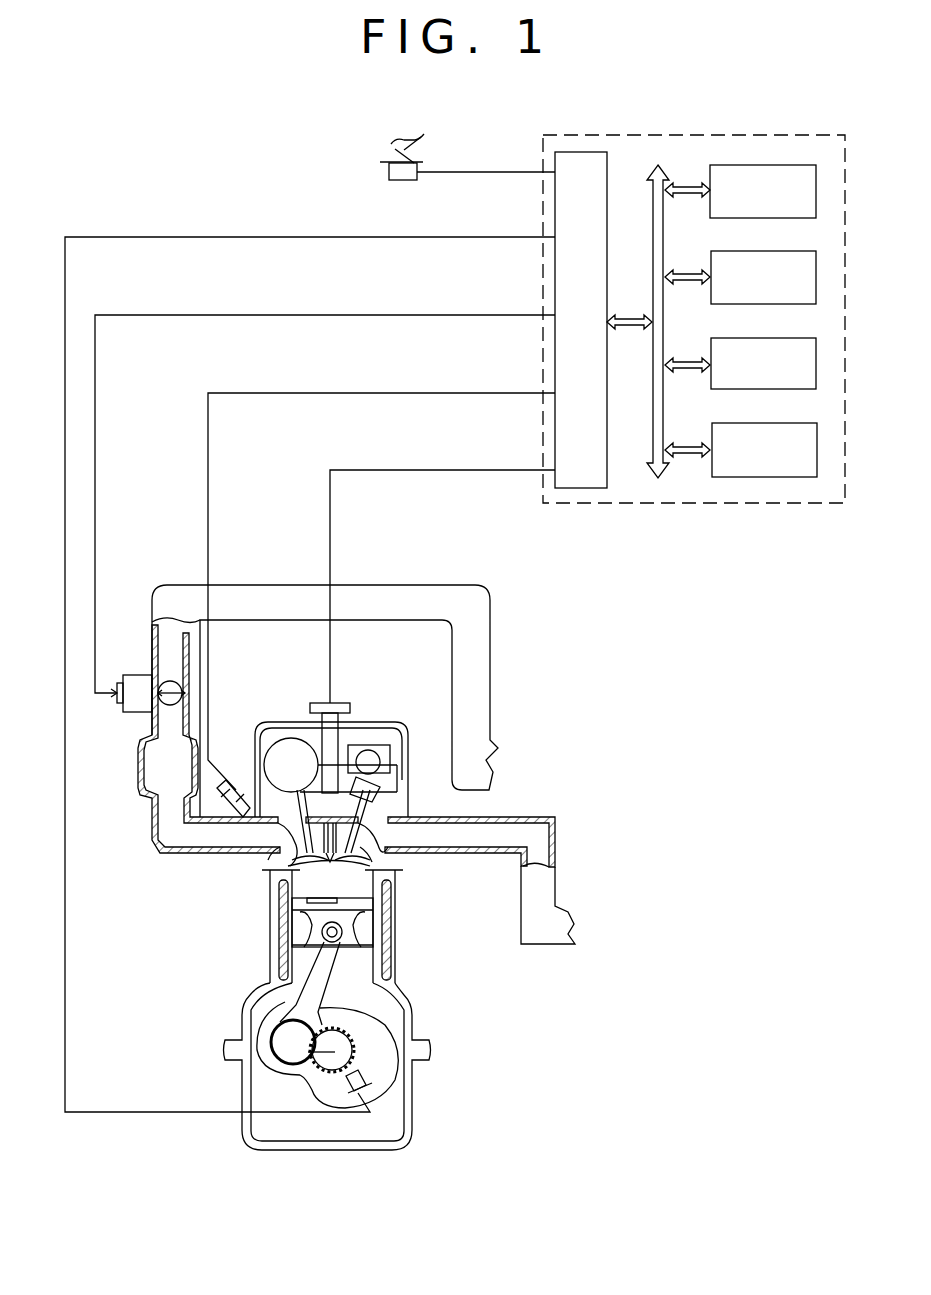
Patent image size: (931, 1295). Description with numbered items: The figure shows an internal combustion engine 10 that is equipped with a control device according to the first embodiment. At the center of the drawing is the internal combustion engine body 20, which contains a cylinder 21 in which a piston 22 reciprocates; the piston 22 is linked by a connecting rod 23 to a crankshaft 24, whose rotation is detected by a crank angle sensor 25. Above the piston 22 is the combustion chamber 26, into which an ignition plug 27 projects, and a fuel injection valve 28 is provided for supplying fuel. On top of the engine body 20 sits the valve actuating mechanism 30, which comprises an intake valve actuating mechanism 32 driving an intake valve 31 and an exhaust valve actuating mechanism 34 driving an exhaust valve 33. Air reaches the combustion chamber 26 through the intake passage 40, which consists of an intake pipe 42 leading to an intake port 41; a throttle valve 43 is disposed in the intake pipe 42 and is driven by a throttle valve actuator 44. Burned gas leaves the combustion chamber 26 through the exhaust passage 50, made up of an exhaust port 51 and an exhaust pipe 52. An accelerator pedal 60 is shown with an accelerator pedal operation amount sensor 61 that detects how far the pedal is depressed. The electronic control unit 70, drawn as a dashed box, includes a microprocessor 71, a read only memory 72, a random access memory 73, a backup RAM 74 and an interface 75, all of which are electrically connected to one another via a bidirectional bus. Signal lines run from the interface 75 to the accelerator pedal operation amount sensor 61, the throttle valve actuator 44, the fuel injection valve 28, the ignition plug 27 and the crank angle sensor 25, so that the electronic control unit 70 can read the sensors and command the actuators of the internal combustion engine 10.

The internal combustion engine 10 is at (132, 962).
The internal combustion engine body 20 is at (237, 965).
The cylinder 21 is at (298, 897).
The piston 22 is at (308, 930).
The connecting rod 23 is at (257, 983).
The crankshaft 24 is at (308, 1052).
The crank angle sensor 25 is at (366, 1084).
The combustion chamber 26 is at (328, 886).
The ignition plug 27 is at (388, 809).
The fuel injection valve 28 is at (248, 800).
The valve actuating mechanism 30 is at (440, 720).
The intake valve 31 is at (290, 866).
The intake valve actuating mechanism 32 is at (296, 738).
The exhaust valve 33 is at (372, 866).
The exhaust valve actuating mechanism 34 is at (372, 750).
The intake passage 40 is at (132, 818).
The intake port 41 is at (266, 855).
The intake pipe 42 is at (180, 585).
The throttle valve 43 is at (165, 682).
The throttle valve actuator 44 is at (138, 712).
The exhaust passage 50 is at (537, 963).
The exhaust port 51 is at (388, 852).
The exhaust pipe 52 is at (452, 853).
The accelerator pedal 60 is at (395, 150).
The accelerator pedal operation amount sensor 61 is at (389, 172).
The electronic control unit 70 is at (700, 503).
The microprocessor 71 is at (752, 166).
The read only memory 72 is at (752, 252).
The random access memory 73 is at (752, 339).
The backup RAM 74 is at (752, 424).
The interface 75 is at (608, 476).